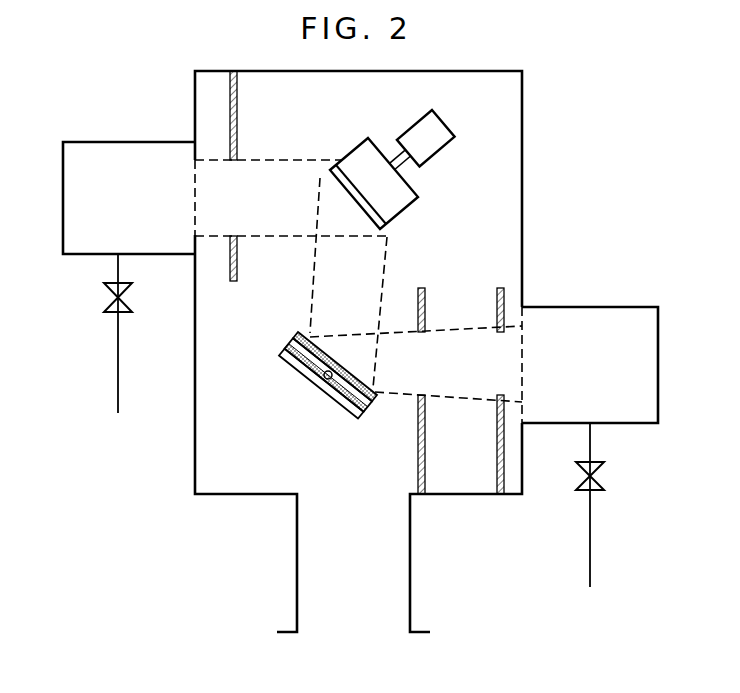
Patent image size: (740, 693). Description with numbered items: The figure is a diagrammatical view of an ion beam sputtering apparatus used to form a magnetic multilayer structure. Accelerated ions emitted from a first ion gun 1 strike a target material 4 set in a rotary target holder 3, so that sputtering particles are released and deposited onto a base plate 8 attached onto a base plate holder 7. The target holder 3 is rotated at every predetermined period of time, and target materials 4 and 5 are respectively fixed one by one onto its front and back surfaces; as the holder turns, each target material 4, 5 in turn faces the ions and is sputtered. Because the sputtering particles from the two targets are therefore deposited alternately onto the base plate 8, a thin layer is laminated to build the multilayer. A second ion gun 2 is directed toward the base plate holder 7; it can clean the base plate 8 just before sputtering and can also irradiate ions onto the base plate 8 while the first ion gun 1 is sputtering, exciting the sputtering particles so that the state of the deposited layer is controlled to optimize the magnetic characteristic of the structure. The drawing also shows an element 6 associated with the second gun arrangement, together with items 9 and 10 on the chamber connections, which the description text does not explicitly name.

The first ion gun 1 is at (580, 323).
The second ion gun 2 is at (120, 156).
The rotary target holder 3 is at (352, 396).
The target material 4 is at (314, 357).
The target material 5 is at (290, 356).
The light source 6 is at (437, 135).
The base plate holder 7 is at (392, 198).
The base plate 8 is at (383, 213).
The valve 9 is at (590, 545).
The valve 10 is at (118, 371).